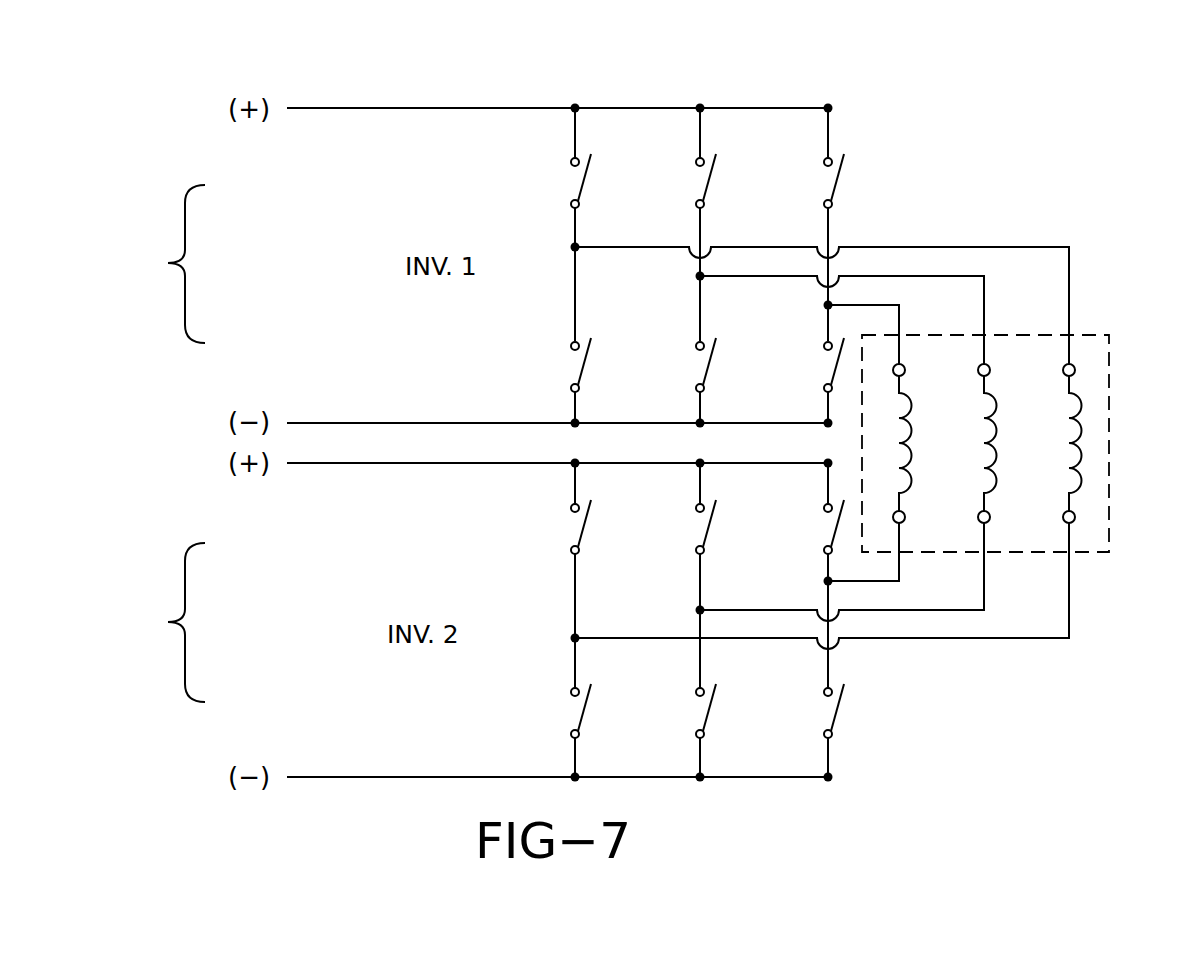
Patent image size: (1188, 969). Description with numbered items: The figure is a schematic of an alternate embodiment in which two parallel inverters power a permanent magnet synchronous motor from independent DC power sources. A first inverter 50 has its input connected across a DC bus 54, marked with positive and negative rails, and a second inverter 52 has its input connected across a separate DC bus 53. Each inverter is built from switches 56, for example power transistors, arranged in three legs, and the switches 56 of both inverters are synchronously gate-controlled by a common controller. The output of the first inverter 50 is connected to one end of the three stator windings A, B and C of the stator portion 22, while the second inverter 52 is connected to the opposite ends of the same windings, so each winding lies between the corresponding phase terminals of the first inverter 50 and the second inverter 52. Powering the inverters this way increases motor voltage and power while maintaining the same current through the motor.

The stator portion 22 is at (1110, 440).
The first inverter 50 is at (623, 225).
The second inverter 52 is at (840, 756).
The DC bus 53 is at (199, 622).
The DC bus 54 is at (199, 264).
The switches 56 is at (676, 170).